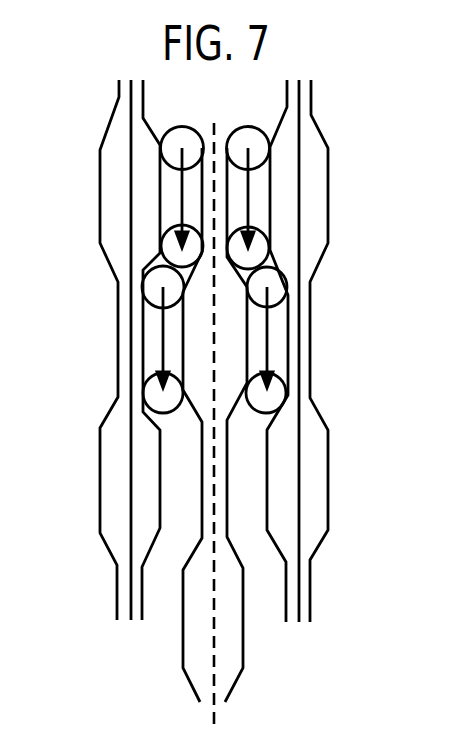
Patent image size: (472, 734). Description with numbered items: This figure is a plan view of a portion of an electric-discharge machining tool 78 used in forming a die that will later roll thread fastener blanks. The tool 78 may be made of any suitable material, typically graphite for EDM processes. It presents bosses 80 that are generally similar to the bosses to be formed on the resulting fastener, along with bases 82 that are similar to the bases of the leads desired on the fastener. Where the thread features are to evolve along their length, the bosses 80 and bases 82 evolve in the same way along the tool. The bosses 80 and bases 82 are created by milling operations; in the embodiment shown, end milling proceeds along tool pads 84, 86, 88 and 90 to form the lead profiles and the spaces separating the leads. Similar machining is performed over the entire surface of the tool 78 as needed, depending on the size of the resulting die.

The tool 78 is at (380, 222).
The bosses 80 is at (112, 232).
The bases 82 is at (170, 211).
The tool pad 84 is at (170, 190).
The tool pad 86 is at (248, 193).
The tool pad 88 is at (170, 355).
The tool pad 90 is at (263, 332).